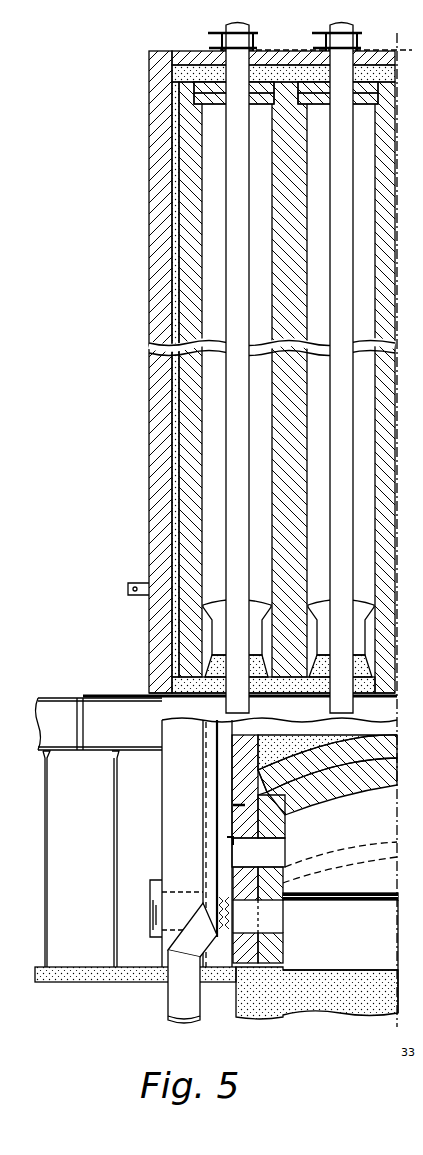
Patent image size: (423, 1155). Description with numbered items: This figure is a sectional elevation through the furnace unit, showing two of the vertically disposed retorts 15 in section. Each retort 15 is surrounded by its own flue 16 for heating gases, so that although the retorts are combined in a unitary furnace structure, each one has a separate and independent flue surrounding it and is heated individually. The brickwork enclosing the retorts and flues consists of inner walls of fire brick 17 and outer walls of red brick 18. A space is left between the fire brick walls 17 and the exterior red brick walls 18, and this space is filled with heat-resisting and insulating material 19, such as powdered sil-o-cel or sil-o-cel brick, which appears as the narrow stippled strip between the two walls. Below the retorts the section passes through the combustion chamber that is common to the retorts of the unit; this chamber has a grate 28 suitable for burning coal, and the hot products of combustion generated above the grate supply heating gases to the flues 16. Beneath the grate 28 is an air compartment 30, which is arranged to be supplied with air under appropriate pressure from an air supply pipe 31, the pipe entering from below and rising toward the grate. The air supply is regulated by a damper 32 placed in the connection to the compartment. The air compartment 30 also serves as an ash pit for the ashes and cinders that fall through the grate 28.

The retort 15 is at (225, 392).
The flue 16 is at (214, 452).
The fire brick inner wall 17 is at (282, 200).
The red brick outer wall 18 is at (151, 277).
The heat-resisting and insulating material 19 is at (175, 320).
The grate 28 is at (381, 899).
The air compartment 30 is at (381, 947).
The air supply pipe 31 is at (176, 995).
The damper 32 is at (229, 935).